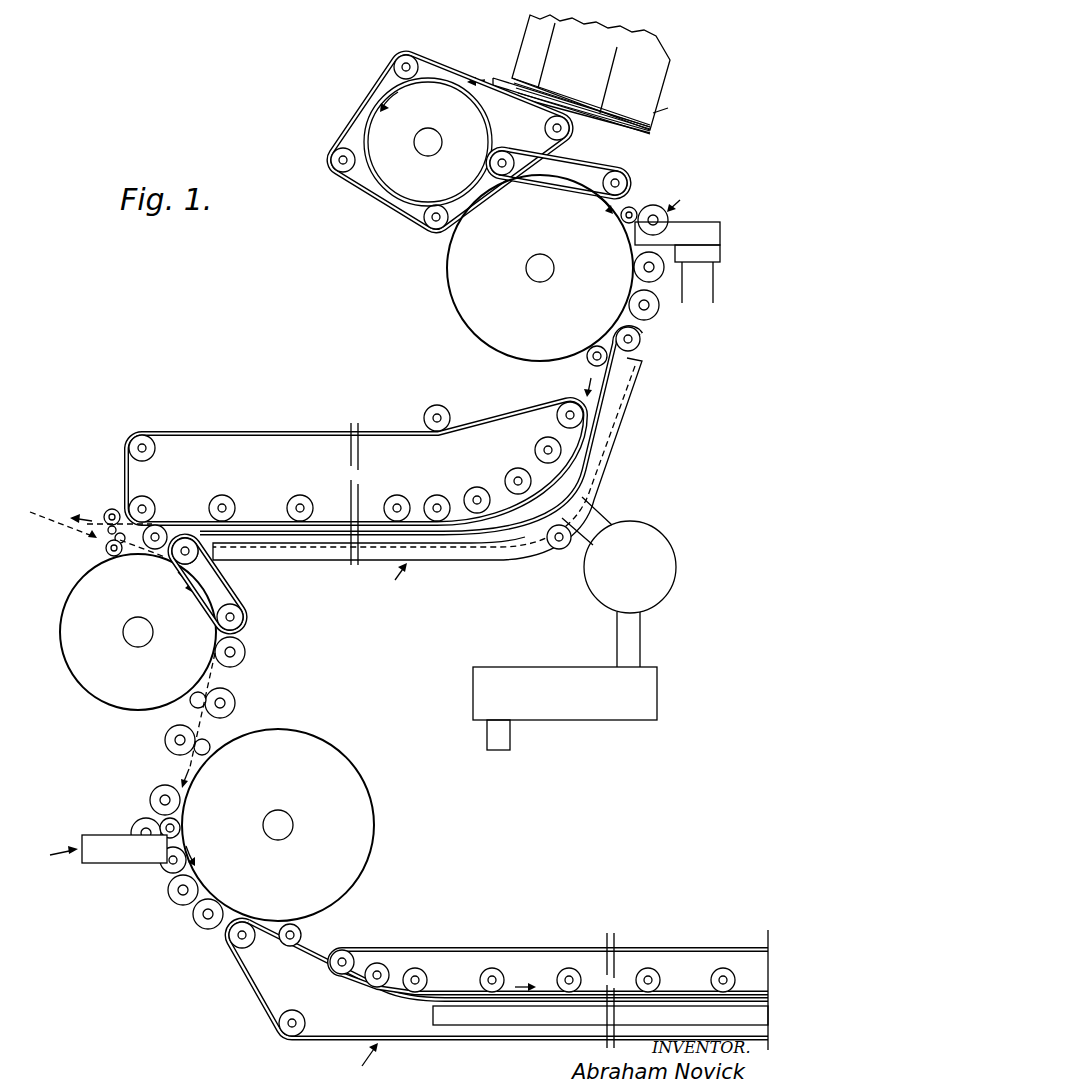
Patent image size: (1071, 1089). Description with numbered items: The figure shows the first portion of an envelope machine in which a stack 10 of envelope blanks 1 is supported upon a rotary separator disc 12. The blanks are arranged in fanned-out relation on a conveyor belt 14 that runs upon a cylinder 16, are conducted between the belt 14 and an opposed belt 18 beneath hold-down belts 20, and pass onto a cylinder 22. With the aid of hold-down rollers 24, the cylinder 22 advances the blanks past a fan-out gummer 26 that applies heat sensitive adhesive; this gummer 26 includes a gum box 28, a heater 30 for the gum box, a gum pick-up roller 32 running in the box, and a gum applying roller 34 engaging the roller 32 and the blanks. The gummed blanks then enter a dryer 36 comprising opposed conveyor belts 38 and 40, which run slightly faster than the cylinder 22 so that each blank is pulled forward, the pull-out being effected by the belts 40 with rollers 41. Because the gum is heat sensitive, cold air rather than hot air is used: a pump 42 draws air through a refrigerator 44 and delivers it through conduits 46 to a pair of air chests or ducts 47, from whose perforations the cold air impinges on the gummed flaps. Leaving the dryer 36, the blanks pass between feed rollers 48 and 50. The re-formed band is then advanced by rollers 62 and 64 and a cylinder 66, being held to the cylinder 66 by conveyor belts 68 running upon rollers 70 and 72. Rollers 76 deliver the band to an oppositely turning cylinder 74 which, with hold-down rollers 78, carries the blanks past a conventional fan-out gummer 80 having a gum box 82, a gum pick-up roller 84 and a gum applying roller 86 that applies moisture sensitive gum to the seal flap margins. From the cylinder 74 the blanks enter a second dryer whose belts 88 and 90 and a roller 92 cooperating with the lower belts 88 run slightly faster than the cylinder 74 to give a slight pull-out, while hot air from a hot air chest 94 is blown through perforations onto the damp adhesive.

The envelope blank 1 is at (653, 113).
The stack 10 is at (513, 59).
The rotary separator disc 12 is at (592, 113).
The conveyor belt 14 is at (511, 101).
The cylinder 16 is at (399, 190).
The opposed belt 18 is at (350, 184).
The hold-down belts 20 is at (579, 164).
The cylinder 22 is at (450, 272).
The hold-down rollers 24 is at (656, 305).
The fan-out gummer 26 is at (686, 197).
The gum box 28 is at (700, 225).
The heater 30 is at (705, 248).
The gum pick-up roller 32 is at (657, 205).
The gum applying roller 34 is at (632, 206).
The dryer 36 is at (427, 479).
The conveyor belt 38 is at (284, 431).
The conveyor belt 40 is at (600, 370).
The rollers 41 is at (593, 348).
The pump 42 is at (653, 543).
The refrigerator 44 is at (598, 716).
The conduits 46 is at (590, 517).
The air chests or ducts 47 is at (526, 534).
The feed roller 48 is at (111, 509).
The feed roller 50 is at (107, 527).
The roller 62 is at (114, 540).
The roller 64 is at (106, 552).
The cylinder 66 is at (77, 657).
The conveyor belts 68 is at (222, 583).
The roller 70 is at (185, 538).
The roller 72 is at (243, 617).
The cylinder 74 is at (342, 768).
The rollers 76 is at (235, 703).
The hold-down rollers 78 is at (162, 791).
The fan-out gummer 80 is at (56, 857).
The gum box 82 is at (113, 858).
The gum pick-up roller 84 is at (141, 828).
The gum applying roller 86 is at (178, 826).
The dryer belts 88 is at (378, 996).
The dryer belts 90 is at (445, 990).
The roller 92 is at (301, 935).
The hot air chest 94 is at (482, 1018).